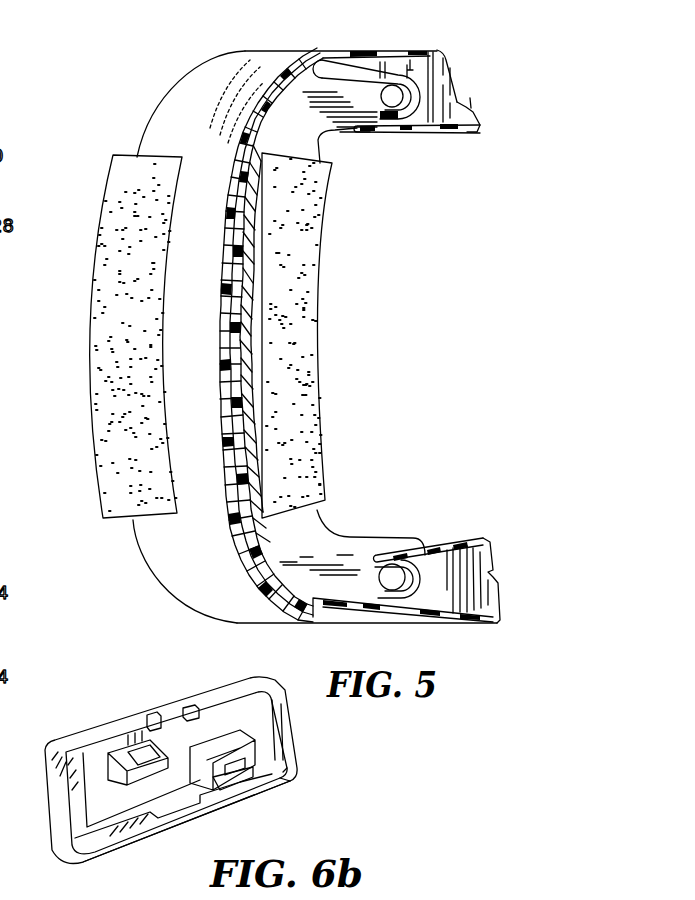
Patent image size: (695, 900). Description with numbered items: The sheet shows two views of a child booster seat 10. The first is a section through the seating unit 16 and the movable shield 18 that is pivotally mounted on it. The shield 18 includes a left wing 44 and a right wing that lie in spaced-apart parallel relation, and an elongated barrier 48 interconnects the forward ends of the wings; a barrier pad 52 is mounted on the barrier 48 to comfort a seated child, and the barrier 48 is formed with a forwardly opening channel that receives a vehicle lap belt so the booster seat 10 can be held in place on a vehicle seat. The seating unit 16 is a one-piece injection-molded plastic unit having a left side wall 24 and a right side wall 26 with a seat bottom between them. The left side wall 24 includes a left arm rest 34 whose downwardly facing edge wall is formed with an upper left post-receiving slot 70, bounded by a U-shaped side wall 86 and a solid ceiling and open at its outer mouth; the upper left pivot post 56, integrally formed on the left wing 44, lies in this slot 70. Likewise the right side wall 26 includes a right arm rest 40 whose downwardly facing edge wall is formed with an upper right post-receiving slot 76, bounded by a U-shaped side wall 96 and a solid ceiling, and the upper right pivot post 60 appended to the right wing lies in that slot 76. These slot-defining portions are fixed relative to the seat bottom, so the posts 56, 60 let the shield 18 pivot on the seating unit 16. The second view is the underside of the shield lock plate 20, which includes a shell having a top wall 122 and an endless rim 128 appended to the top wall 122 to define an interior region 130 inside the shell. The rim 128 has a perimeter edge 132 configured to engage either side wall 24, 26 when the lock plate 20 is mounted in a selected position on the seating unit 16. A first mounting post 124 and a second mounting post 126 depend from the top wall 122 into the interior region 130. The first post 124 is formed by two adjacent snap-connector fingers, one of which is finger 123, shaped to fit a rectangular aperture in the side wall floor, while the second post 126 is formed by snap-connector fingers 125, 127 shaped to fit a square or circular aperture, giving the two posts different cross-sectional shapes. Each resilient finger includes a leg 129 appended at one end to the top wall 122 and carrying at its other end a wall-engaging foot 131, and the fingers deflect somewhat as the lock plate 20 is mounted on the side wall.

In FIG. 5, the booster seat 10 is at (95, 67).
In FIG. 5, the shield 18 is at (131, 141).
In FIG. 5, the barrier 48 is at (321, 46).
In FIG. 5, the barrier pad 52 is at (145, 302).
In FIG. 5, the seating unit 16 is at (415, 46).
In FIG. 5, the right side wall 26 is at (472, 138).
In FIG. 5, the right arm rest 40 is at (447, 136).
In FIG. 5, the U-shaped side wall 96 is at (362, 85).
In FIG. 5, the upper right pivot post 60 is at (395, 102).
In FIG. 5, the upper right post-receiving slot 76 is at (335, 91).
In FIG. 5, the upper left pivot post 56 is at (370, 560).
In FIG. 5, the left arm rest 34 is at (440, 537).
In FIG. 5, the left side wall 24 is at (467, 535).
In FIG. 5, the left wing 44 is at (327, 635).
In FIG. 5, the U-shaped side wall 86 is at (380, 584).
In FIG. 5, the upper left post-receiving slot 70 is at (362, 584).
In FIG. 6B, the shield lock plate 20 is at (295, 781).
In FIG. 6B, the top wall 122 is at (265, 747).
In FIG. 6B, the snap-connector finger 127 is at (275, 722).
In FIG. 6B, the endless rim 128 is at (77, 732).
In FIG. 6B, the interior region 130 is at (90, 794).
In FIG. 6B, the perimeter edge 132 is at (122, 842).
In FIG. 6B, the second mounting post 126 is at (269, 782).
In FIG. 6B, the snap-connector finger 123 is at (150, 790).
In FIG. 6B, the first mounting post 124 is at (168, 735).
In FIG. 6B, the snap-connector finger 125 is at (217, 748).
In FIG. 6B, the leg 129 is at (130, 750).
In FIG. 6B, the wall-engaging foot 131 is at (163, 747).